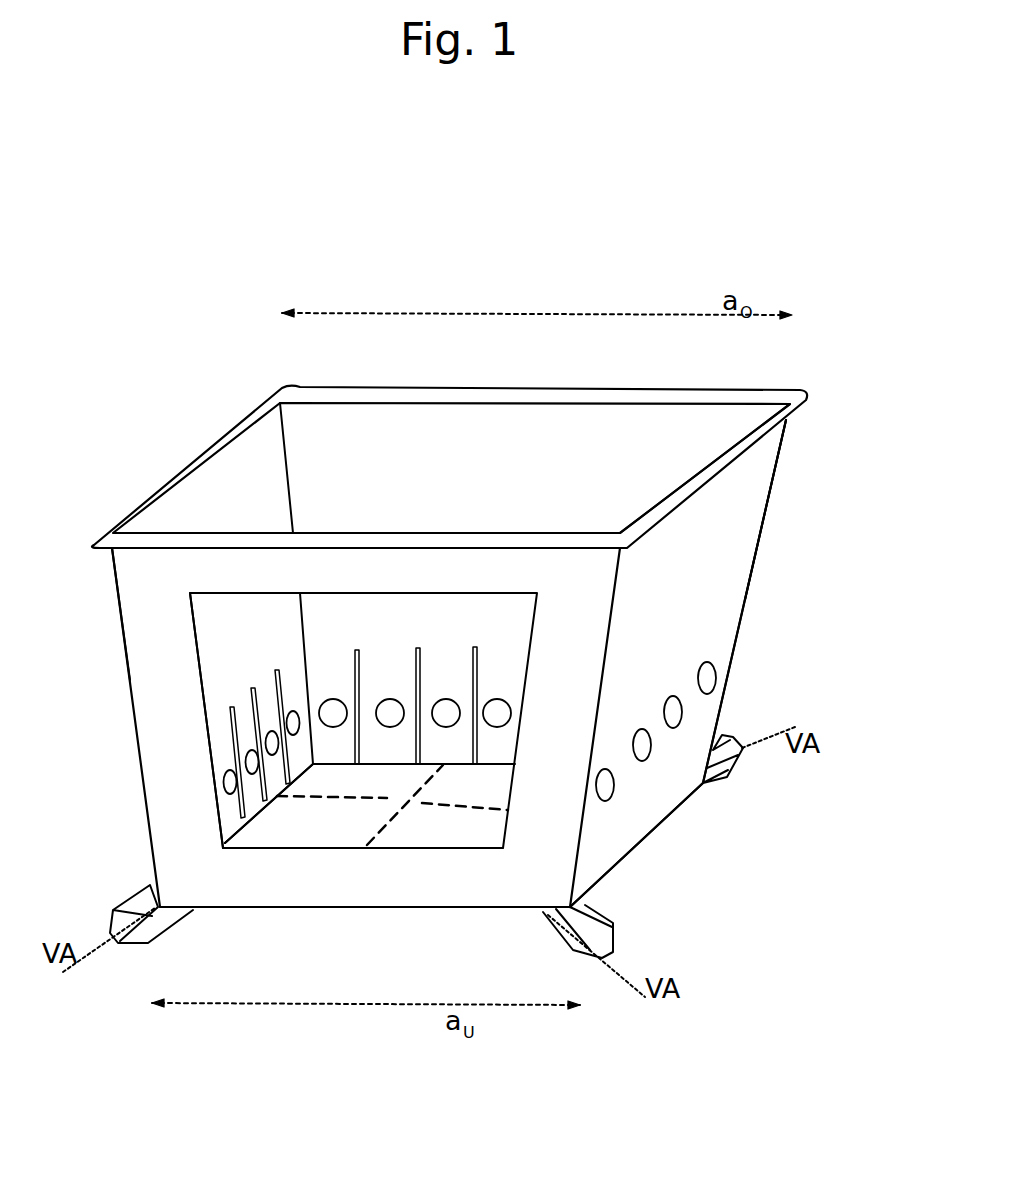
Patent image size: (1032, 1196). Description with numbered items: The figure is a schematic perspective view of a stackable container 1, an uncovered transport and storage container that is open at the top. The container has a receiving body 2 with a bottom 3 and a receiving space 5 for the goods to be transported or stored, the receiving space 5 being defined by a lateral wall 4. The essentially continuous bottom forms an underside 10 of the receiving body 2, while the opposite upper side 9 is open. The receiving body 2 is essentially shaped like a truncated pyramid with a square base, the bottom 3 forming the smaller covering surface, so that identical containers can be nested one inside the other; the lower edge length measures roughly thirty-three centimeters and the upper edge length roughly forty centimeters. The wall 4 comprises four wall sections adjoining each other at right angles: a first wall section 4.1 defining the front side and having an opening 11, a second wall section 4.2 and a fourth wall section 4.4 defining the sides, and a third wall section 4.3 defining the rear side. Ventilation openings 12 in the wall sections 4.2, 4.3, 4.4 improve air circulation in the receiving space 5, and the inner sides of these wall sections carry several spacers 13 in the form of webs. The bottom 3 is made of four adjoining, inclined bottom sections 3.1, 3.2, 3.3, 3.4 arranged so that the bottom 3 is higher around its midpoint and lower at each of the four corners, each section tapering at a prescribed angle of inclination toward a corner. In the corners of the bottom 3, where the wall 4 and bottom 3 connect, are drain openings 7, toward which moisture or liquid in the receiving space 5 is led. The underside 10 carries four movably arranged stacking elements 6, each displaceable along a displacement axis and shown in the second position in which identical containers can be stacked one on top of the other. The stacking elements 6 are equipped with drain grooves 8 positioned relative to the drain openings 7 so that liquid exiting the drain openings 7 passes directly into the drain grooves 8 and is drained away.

The stackable container 1 is at (105, 265).
The receiving body 2 is at (145, 627).
The bottom 3 is at (296, 836).
The bottom section 3.1 is at (322, 833).
The bottom section 3.2 is at (417, 833).
The bottom section 3.3 is at (488, 787).
The bottom section 3.4 is at (352, 778).
The lateral wall 4 is at (718, 550).
The first wall section 4.1 is at (144, 678).
The second wall section 4.2 is at (725, 604).
The third wall section 4.3 is at (601, 441).
The fourth wall section 4.4 is at (263, 511).
The receiving space 5 is at (303, 437).
The stacking element 6 is at (172, 915).
The drain opening 7 is at (318, 770).
The drain groove 8 is at (118, 943).
The upper side 9 is at (822, 406).
The underside 10 is at (655, 845).
The opening 11 is at (203, 675).
The ventilation opening 12 is at (705, 680).
The spacer 13 is at (358, 662).